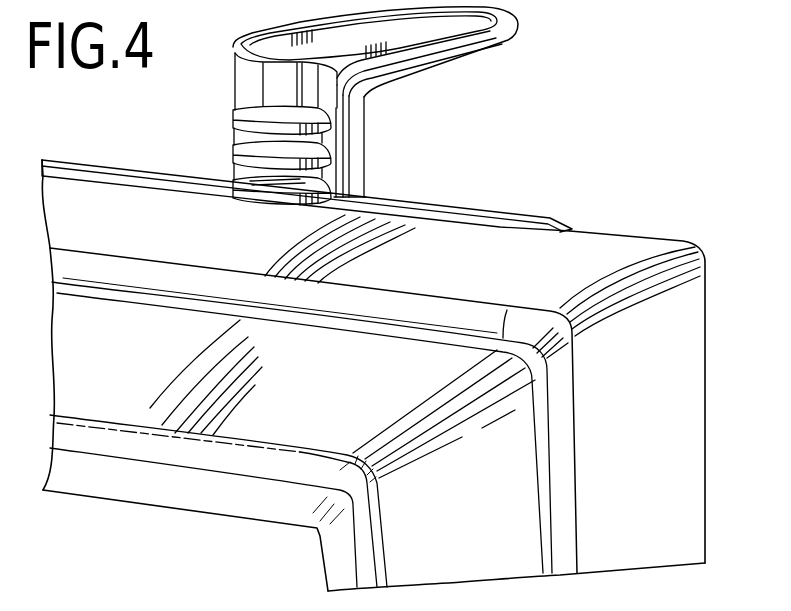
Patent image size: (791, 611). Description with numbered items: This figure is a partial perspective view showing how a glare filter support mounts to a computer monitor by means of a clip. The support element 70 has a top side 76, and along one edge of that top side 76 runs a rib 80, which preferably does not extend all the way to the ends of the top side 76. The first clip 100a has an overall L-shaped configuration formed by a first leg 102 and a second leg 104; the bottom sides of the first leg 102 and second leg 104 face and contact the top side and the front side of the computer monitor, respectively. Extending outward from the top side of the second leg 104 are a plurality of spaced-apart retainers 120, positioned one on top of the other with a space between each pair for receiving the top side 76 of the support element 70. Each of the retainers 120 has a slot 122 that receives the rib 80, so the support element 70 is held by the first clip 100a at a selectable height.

The support element 70 is at (387, 375).
The top side 76 is at (597, 261).
The rib 80 is at (438, 202).
The first clip 100a is at (386, 106).
The first leg 102 is at (520, 32).
The second leg 104 is at (229, 106).
The retainers 120 is at (247, 182).
The slot 122 is at (333, 188).